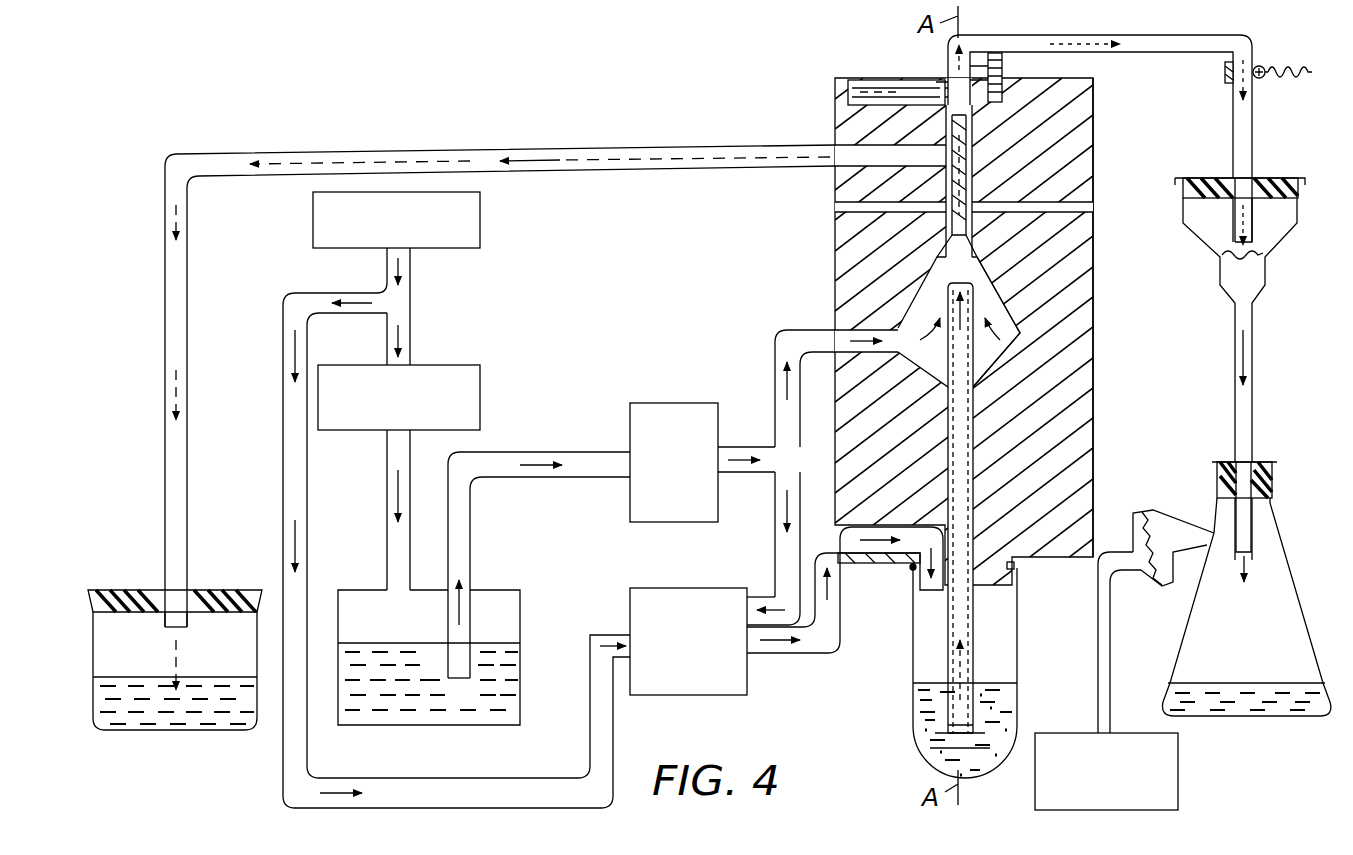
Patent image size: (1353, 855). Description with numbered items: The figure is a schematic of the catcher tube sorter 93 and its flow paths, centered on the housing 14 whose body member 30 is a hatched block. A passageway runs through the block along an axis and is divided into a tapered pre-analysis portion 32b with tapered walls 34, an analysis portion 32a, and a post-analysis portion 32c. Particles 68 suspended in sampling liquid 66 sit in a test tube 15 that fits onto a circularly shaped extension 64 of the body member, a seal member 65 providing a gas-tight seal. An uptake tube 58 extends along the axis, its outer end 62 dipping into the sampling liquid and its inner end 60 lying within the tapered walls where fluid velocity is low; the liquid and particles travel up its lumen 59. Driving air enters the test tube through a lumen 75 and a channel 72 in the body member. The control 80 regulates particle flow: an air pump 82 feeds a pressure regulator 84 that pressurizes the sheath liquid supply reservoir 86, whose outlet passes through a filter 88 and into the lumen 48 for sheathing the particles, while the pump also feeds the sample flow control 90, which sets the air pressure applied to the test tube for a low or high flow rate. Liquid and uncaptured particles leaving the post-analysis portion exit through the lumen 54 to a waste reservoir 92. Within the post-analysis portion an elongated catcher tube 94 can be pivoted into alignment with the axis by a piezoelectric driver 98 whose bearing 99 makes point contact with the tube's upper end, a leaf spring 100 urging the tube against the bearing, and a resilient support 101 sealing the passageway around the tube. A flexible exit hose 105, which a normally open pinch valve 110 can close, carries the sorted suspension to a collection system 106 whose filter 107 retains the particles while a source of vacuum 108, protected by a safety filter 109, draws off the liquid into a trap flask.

The housing 14 is at (1106, 178).
The test tube 15 is at (912, 634).
The body member 30 is at (1093, 398).
The analysis portion 32a is at (946, 224).
The pre-analysis portion 32b is at (1005, 325).
The post-analysis portion 32c is at (947, 168).
The tapered walls 34 is at (985, 282).
The lumen 48 is at (796, 336).
The lumen 54 is at (652, 156).
The uptake tube 58 is at (978, 679).
The lumen 59 is at (960, 745).
The inner end 60 is at (980, 300).
The outer end 62 is at (950, 727).
The circularly shaped extension 64 is at (1012, 572).
The seal member 65 is at (908, 570).
The sampling liquid 66 is at (914, 700).
The particles 68 is at (1010, 718).
The channel 72 is at (850, 528).
The lumen 75 is at (826, 654).
The control 80 is at (578, 372).
The air pump 82 is at (482, 215).
The pressure regulator 84 is at (484, 383).
The sheath liquid supply reservoir 86 is at (520, 630).
The filter 88 is at (684, 402).
The sample flow control 90 is at (690, 698).
The waste reservoir 92 is at (256, 730).
The catcher tube sorter 93 is at (906, 58).
The catcher tube 94 is at (967, 162).
The driver 98 is at (858, 88).
The bearing 99 is at (940, 78).
The leaf spring 100 is at (982, 67).
The resilient support 101 is at (1000, 104).
The flexible exit hose 105 is at (1095, 35).
The collection system 106 is at (1280, 556).
The filter 107 is at (1263, 253).
The source of vacuum 108 is at (1180, 772).
The safety filter 109 is at (1152, 510).
The pinch valve 110 is at (1305, 68).